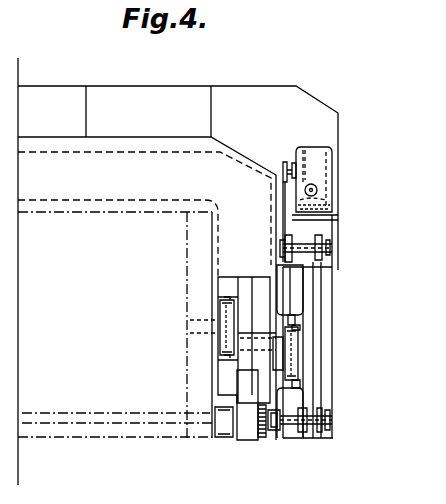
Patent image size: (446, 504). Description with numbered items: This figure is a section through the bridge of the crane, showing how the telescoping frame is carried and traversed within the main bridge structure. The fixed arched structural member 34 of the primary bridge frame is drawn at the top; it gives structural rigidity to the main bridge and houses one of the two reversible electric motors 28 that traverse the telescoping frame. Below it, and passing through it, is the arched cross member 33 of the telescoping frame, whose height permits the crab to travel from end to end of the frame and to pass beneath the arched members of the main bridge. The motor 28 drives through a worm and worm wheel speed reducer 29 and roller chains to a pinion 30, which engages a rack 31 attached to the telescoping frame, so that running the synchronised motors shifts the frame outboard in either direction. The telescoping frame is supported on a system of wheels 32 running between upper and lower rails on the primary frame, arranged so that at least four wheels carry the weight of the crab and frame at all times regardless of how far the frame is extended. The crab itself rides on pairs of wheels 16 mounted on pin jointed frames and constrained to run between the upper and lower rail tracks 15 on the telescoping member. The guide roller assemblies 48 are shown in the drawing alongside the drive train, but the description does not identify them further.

The arched structural member 34 is at (148, 111).
The arched cross member 33 is at (140, 178).
The reversible electric motor 28 is at (303, 165).
The worm and worm wheel speed reducer 29 is at (326, 150).
The wheels 16 is at (236, 297).
The rail tracks 15 is at (230, 297).
The rack 31 is at (264, 403).
The pinion 30 is at (260, 438).
The guide roller 48 is at (302, 328).
The wheels 32 is at (303, 341).